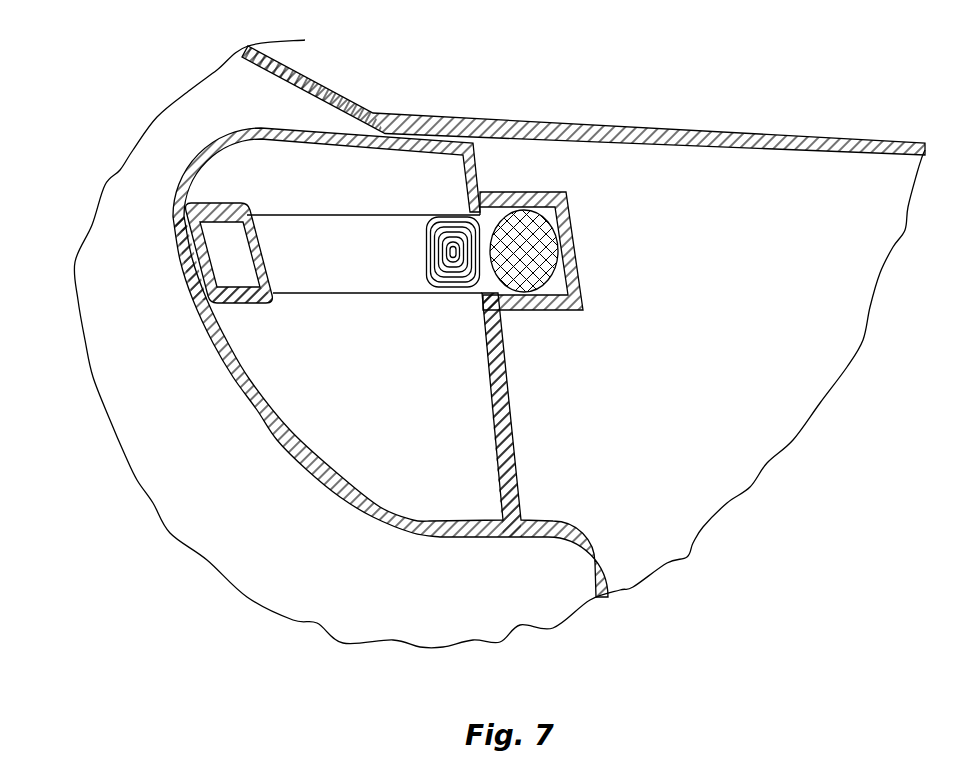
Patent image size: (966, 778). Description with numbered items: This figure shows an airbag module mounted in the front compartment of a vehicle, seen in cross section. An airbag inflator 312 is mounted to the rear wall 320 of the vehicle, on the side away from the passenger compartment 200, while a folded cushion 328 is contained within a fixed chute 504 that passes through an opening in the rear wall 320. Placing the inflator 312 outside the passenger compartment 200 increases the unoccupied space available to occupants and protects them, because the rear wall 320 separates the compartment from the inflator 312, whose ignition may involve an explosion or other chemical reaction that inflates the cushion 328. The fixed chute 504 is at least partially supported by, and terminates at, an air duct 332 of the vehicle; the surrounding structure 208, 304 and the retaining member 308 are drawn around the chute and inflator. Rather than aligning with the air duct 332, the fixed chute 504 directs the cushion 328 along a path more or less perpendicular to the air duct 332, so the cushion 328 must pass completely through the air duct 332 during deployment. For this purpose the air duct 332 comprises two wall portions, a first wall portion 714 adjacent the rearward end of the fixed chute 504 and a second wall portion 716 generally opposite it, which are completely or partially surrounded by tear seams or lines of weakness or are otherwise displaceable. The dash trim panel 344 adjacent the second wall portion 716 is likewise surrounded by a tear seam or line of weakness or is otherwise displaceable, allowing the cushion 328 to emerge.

The passenger compartment 200 is at (282, 587).
The housing 208 is at (334, 362).
The frame 304 is at (750, 168).
The retainer 308 is at (537, 192).
The airbag inflator 312 is at (557, 243).
The rear wall 320 is at (510, 423).
The folded cushion 328 is at (430, 216).
The air duct 332 is at (270, 303).
The dash trim panel 344 is at (180, 253).
The fixed chute 504 is at (376, 297).
The first wall portion 714 is at (280, 286).
The second wall portion 716 is at (187, 221).